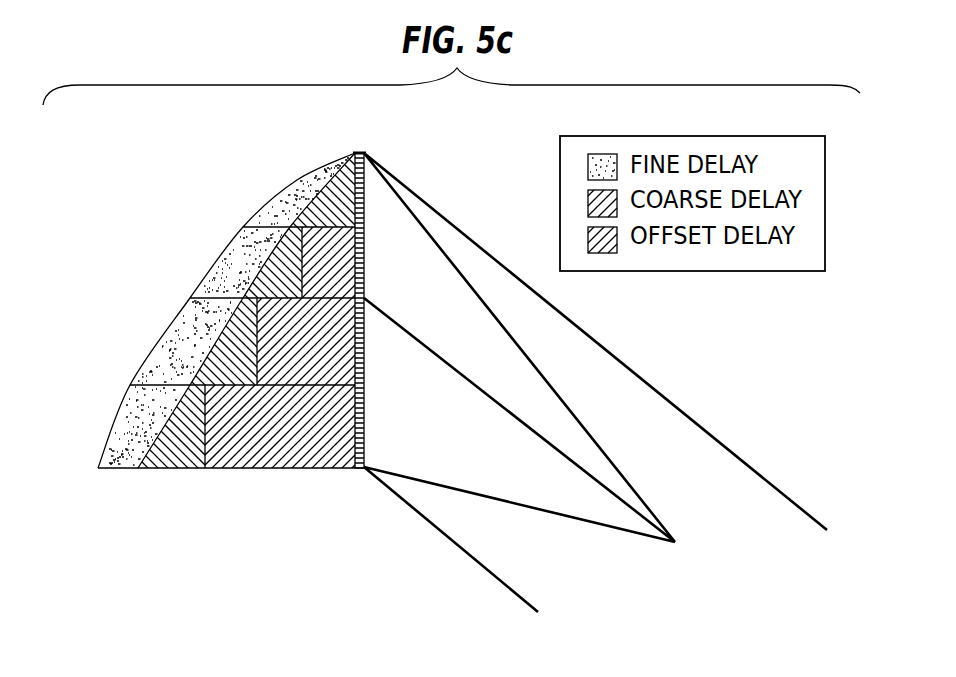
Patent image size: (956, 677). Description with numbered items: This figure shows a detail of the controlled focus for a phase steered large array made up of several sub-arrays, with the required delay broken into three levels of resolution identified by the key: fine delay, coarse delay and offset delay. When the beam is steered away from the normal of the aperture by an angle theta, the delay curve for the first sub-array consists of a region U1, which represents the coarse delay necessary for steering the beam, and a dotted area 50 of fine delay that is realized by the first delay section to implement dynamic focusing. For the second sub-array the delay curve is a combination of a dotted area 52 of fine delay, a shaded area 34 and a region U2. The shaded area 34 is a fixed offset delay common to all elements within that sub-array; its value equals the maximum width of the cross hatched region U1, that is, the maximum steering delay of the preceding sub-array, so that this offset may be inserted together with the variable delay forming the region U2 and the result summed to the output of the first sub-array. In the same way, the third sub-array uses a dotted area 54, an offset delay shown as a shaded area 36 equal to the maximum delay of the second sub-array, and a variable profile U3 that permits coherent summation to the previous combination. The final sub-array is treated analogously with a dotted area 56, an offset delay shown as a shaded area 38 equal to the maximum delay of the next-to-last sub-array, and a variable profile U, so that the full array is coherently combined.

The region U1 is at (320, 183).
The region U2 is at (248, 230).
The variable profile U3 is at (182, 312).
The variable profile UJ U is at (140, 427).
The dotted area 50 is at (279, 193).
The dotted area 52 is at (228, 258).
The dotted area 54 is at (175, 345).
The dotted area 56 is at (110, 432).
The shaded area 34 is at (343, 271).
The shaded area 36 is at (340, 364).
The shaded area 38 is at (337, 423).